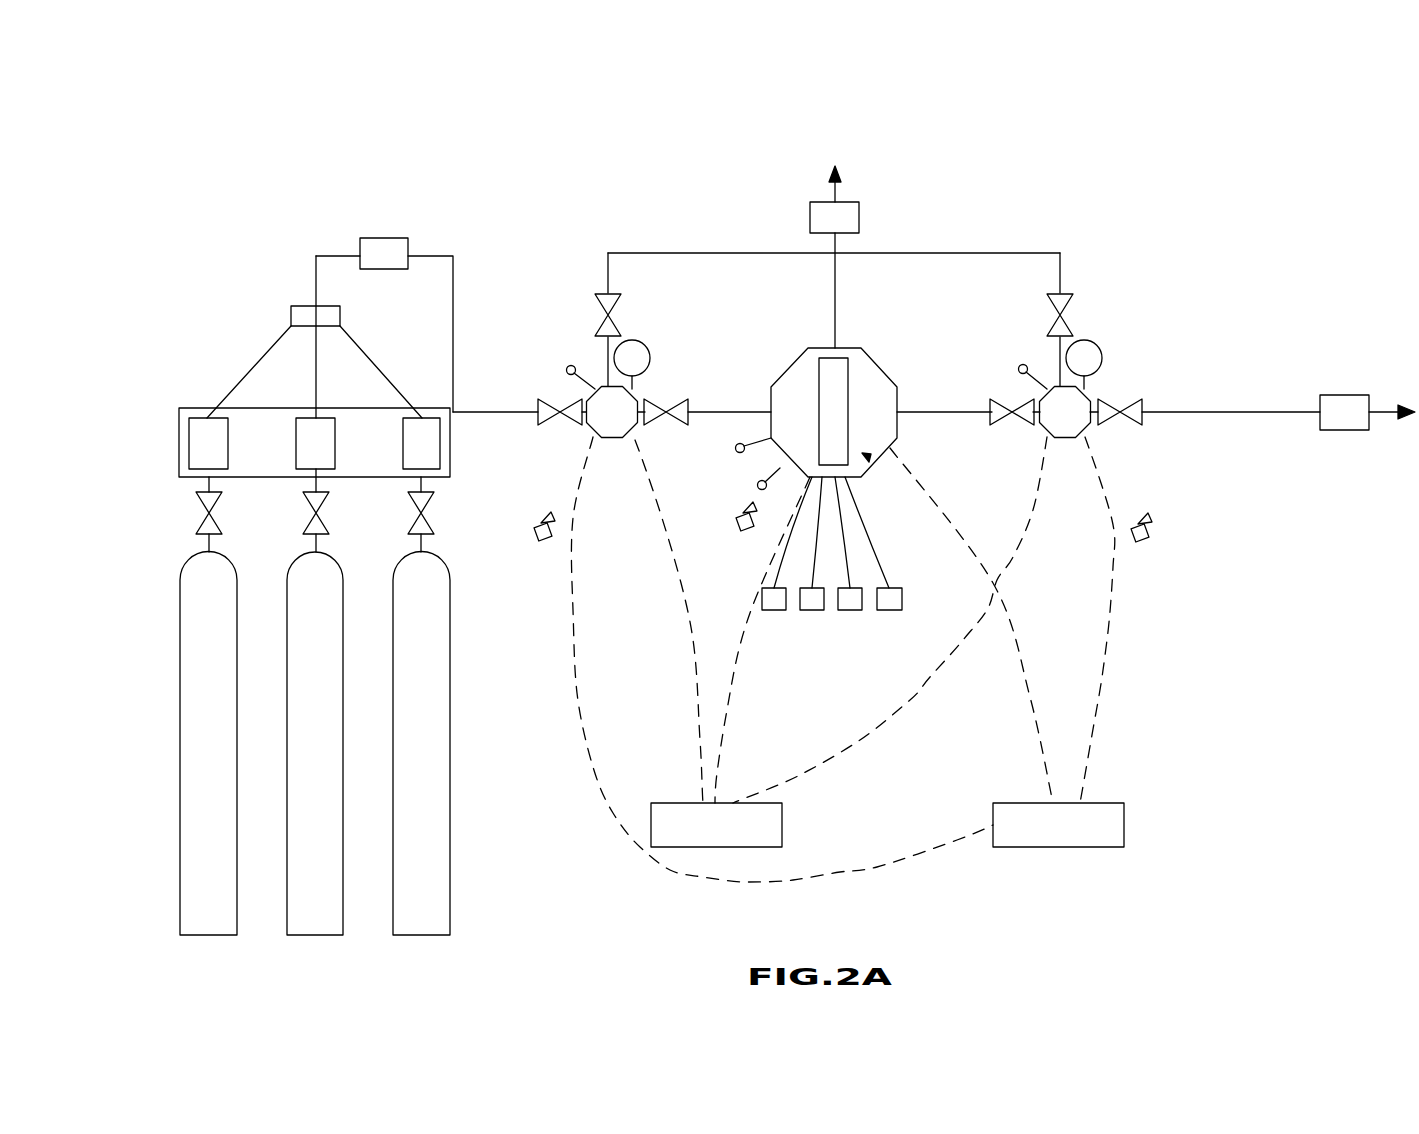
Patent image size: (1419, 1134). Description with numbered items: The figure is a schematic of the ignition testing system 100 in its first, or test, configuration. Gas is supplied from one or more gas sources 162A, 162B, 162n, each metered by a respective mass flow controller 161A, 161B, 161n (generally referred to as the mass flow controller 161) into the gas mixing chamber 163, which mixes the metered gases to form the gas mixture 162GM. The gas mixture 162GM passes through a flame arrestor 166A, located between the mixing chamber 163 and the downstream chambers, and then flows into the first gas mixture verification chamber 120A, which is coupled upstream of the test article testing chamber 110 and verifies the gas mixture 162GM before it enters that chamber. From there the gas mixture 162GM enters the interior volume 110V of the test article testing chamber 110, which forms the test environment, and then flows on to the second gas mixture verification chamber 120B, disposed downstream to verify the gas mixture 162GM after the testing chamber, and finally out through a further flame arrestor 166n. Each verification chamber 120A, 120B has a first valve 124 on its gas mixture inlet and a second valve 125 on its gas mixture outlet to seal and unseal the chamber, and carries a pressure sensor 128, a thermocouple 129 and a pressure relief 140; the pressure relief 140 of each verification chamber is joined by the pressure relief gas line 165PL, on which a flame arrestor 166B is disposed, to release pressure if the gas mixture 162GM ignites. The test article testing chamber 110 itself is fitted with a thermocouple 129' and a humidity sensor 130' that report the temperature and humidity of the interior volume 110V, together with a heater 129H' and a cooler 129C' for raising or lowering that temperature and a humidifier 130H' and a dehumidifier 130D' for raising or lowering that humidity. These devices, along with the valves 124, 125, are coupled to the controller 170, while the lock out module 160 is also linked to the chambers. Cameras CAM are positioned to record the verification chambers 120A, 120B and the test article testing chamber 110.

The ignition testing system 100 is at (1272, 172).
The test article testing chamber 110 is at (855, 348).
The interior volume 110V is at (869, 460).
The first gas mixture verification chamber 120A is at (612, 438).
The second gas mixture verification chamber 120B is at (1065, 438).
The first valve 124 is at (567, 422).
The second valve 125 is at (658, 424).
The pressure sensor 128 is at (647, 347).
The thermocouple 129 is at (793, 355).
The thermocouple 129' is at (730, 434).
The cooler 129C' is at (855, 643).
The heater 129H' is at (901, 623).
The humidity sensor 130' is at (730, 491).
The dehumidifier 130D' is at (771, 643).
The humidifier 130H' is at (811, 623).
The pressure relief 140 is at (618, 320).
The lock out module 160 is at (1124, 826).
The mass flow controller 161 is at (185, 408).
The mass flow controller 161A is at (187, 445).
The mass flow controller 161B is at (296, 445).
The mass flow controller 161n is at (403, 445).
The gas source 162A is at (208, 935).
The gas source 162B is at (316, 935).
The gas source 162n is at (421, 935).
The gas mixture 162GM is at (342, 241).
The gas mixing chamber 163 is at (293, 308).
The pressure relief gas line 165PL is at (987, 253).
The flame arrestor 166A is at (383, 238).
The flame arrestor 166B is at (859, 215).
The flame arrestor 166n is at (1341, 395).
The controller 170 is at (782, 826).
The camera CAM is at (540, 541).